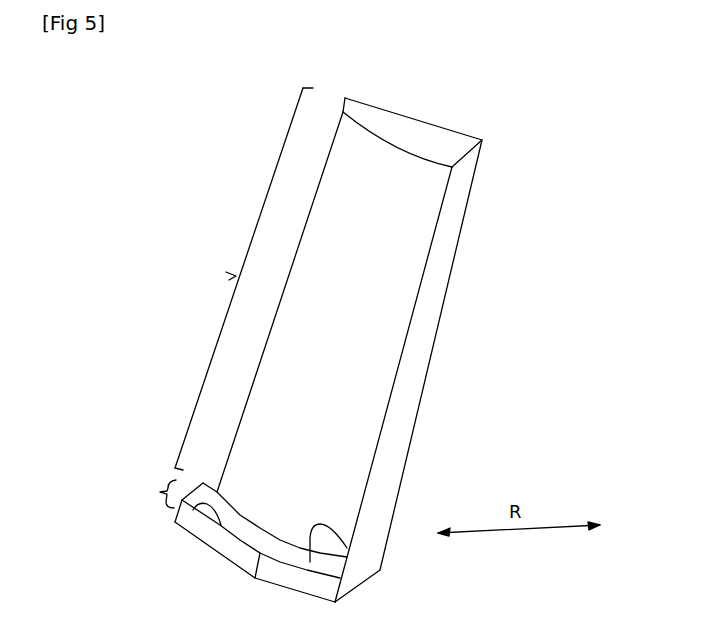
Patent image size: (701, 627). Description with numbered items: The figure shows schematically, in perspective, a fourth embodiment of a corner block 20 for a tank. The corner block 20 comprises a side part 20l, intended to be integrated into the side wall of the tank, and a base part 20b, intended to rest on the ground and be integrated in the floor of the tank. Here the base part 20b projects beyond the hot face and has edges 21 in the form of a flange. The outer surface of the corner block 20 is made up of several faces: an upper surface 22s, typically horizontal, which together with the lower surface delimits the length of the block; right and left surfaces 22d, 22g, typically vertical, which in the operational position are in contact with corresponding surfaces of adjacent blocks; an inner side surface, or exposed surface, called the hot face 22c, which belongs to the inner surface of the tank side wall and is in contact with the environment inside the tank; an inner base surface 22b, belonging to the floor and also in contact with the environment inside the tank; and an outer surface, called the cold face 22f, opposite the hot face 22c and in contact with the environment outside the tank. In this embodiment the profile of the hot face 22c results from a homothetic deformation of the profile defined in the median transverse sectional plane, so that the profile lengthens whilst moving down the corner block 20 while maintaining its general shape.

The corner block 20 is at (358, 339).
The side part 20l is at (244, 279).
The base part 20b is at (144, 490).
The edges 21 is at (175, 522).
The upper surface 22s is at (430, 142).
The left surface 22g is at (327, 157).
The cold face 22f is at (407, 227).
The hot face 22c is at (365, 283).
The right surface 22d is at (400, 428).
The inner base surface 22b is at (347, 548).